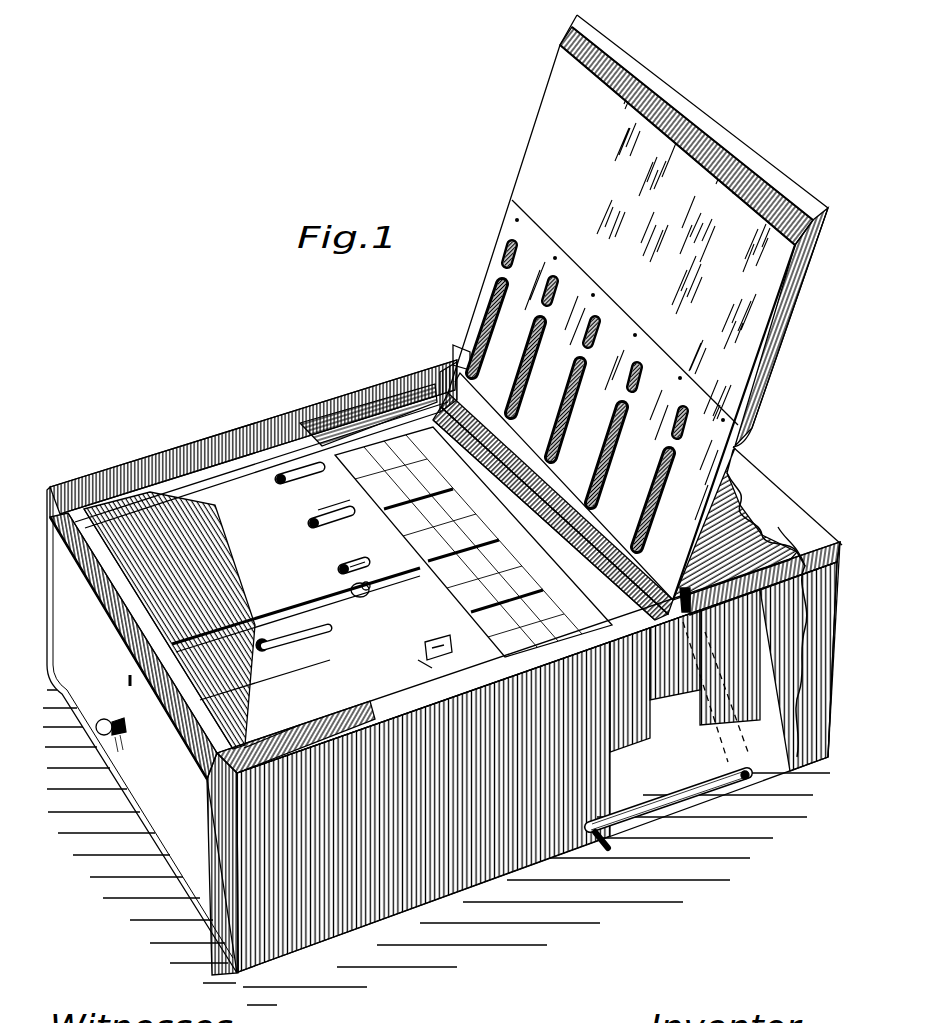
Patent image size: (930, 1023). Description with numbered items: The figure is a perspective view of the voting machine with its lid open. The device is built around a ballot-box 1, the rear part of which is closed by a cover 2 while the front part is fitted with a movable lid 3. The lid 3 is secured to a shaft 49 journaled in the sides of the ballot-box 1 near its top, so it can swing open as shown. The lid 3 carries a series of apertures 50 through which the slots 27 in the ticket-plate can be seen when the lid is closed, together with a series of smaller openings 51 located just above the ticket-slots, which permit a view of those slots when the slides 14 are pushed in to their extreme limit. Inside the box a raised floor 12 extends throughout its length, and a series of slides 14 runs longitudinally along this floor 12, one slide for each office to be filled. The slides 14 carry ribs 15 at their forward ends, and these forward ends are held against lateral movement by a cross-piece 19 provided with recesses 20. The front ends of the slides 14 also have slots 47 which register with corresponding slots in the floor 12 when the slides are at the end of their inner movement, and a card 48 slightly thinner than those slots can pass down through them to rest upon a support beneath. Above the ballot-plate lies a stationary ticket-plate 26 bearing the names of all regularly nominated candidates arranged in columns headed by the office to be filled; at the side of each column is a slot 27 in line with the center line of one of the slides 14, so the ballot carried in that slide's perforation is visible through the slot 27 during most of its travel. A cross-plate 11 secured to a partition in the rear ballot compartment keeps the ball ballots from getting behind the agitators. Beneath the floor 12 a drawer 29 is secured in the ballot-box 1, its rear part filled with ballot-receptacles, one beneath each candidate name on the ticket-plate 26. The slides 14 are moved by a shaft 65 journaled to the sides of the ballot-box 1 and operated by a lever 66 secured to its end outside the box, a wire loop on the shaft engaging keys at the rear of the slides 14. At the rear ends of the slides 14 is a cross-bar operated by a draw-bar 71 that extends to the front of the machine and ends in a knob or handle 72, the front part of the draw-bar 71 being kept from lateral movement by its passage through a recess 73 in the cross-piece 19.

The ballot-box 1 is at (178, 446).
The cover 2 is at (767, 497).
The movable lid 3 is at (638, 307).
The cross-plate 11 is at (608, 571).
The raised floor 12 is at (272, 717).
The slides 14 is at (278, 474).
The ribs 15 is at (292, 484).
The cross-piece 19 is at (297, 430).
The recesses 20 is at (318, 513).
The ticket-plate 26 is at (437, 420).
The slots 27 is at (430, 430).
The drawer 29 is at (143, 735).
The slots 47 is at (350, 567).
The card 48 is at (428, 645).
The shaft 49 is at (530, 513).
The apertures 50 is at (600, 445).
The smaller openings 51 is at (636, 382).
The shaft 65 is at (750, 767).
The lever 66 is at (683, 787).
The draw-bar 71 is at (352, 588).
The knob or handle 72 is at (262, 668).
The recess 73 is at (302, 655).